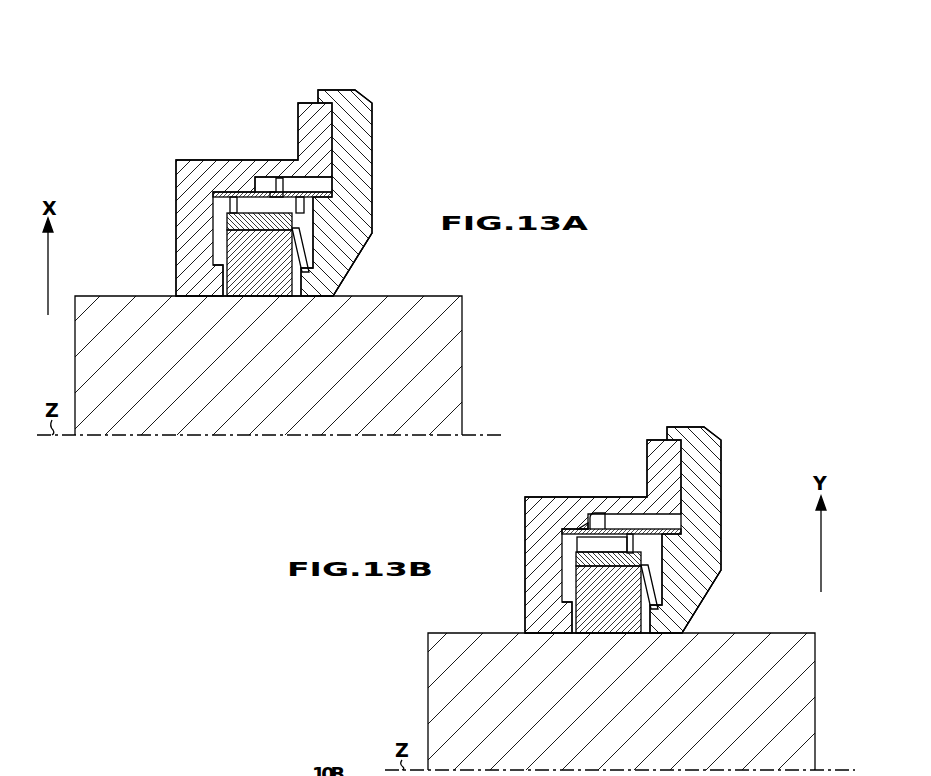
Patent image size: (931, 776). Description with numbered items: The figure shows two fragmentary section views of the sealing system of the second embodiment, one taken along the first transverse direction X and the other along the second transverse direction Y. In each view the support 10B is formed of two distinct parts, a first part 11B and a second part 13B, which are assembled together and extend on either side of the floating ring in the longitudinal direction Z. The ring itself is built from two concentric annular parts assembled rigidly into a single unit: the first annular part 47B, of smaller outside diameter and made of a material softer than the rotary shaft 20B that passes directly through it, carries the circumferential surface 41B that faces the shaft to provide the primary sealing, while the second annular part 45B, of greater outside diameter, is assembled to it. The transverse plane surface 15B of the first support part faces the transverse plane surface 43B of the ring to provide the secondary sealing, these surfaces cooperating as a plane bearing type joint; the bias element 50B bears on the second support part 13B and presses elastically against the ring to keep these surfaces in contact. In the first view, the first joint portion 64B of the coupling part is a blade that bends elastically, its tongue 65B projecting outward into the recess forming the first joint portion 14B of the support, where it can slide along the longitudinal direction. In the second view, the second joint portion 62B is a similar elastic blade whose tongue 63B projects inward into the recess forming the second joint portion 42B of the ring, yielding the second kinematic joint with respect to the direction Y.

In FIG. 13A, the support 10B is at (380, 57).
In FIG. 13B, the support 10B is at (728, 393).
In FIG. 13A, the first part of the support 11B is at (304, 103).
In FIG. 13B, the first part of the support 11B is at (654, 440).
In FIG. 13A, the second part of the support 13B is at (356, 98).
In FIG. 13B, the second part of the support 13B is at (706, 435).
In FIG. 13A, the first joint portion 14B is at (325, 181).
In FIG. 13A, the transverse plane surface 15B is at (213, 284).
In FIG. 13B, the transverse plane surface 15B is at (562, 621).
In FIG. 13A, the rotary shaft 20B is at (97, 352).
In FIG. 13B, the rotary shaft 20B is at (447, 688).
In FIG. 13A, the circumferential surface 41B is at (278, 292).
In FIG. 13B, the circumferential surface 41B is at (627, 629).
In FIG. 13B, the second joint portion 42B is at (578, 526).
In FIG. 13A, the transverse plane surface 43B is at (228, 290).
In FIG. 13B, the transverse plane surface 43B is at (577, 627).
In FIG. 13A, the second annular part 45B is at (227, 220).
In FIG. 13B, the second annular part 45B is at (576, 554).
In FIG. 13A, the first annular part 47B is at (250, 260).
In FIG. 13B, the first annular part 47B is at (600, 598).
In FIG. 13A, the bias element 50B is at (308, 253).
In FIG. 13B, the bias element 50B is at (660, 583).
In FIG. 13B, the second joint portion 62B is at (597, 513).
In FIG. 13B, the tongue 63B is at (663, 545).
In FIG. 13A, the first joint portion 64B is at (248, 186).
In FIG. 13A, the tongue 65B is at (278, 178).